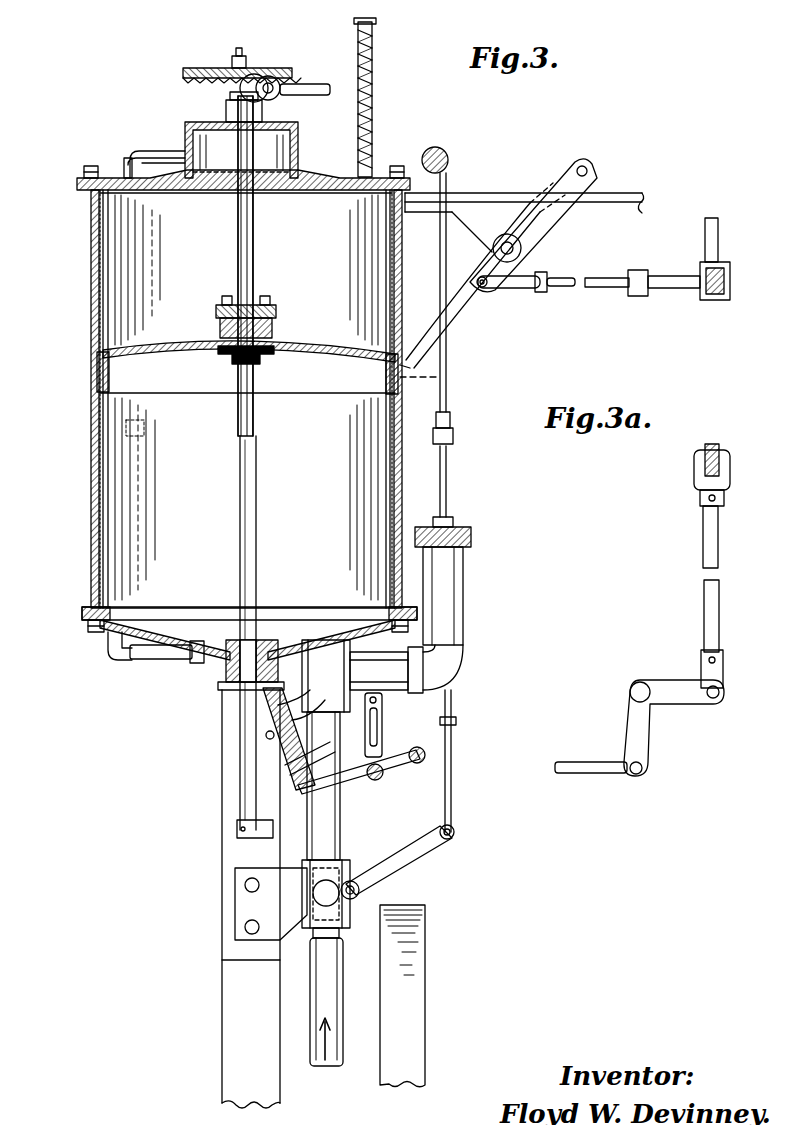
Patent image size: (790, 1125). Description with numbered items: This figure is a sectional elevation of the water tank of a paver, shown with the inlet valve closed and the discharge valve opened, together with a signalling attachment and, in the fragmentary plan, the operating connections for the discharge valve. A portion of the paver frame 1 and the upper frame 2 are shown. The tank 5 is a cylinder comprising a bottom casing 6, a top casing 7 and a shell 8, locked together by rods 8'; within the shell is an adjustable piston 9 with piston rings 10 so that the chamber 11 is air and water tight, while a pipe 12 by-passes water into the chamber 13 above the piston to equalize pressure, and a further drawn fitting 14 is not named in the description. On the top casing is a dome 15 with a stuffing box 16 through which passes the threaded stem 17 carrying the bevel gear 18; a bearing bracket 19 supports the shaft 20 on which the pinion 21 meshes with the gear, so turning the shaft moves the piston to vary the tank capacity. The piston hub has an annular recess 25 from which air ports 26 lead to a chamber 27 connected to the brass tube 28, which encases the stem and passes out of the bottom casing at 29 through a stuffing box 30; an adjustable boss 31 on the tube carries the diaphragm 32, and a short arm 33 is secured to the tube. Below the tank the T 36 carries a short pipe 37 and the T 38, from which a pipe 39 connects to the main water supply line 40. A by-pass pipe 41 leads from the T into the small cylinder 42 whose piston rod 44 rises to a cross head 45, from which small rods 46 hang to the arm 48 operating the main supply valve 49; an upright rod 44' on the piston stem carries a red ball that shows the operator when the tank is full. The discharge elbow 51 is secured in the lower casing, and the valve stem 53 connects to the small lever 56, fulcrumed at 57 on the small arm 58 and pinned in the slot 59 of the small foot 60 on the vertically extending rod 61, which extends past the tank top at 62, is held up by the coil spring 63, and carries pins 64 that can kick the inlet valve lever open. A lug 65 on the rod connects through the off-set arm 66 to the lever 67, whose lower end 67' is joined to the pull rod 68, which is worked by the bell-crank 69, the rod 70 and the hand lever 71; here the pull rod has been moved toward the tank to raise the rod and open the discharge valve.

In FIG. 3, the paver frame 1 is at (232, 848).
In FIG. 3, the upper frame 2 is at (612, 200).
In FIG. 3, the tank 5 is at (286, 491).
In FIG. 3, the bottom casing 6 is at (118, 625).
In FIG. 3, the top casing 7 is at (112, 178).
In FIG. 3, the shell 8 is at (222, 399).
In FIG. 3, the rods 8' is at (242, 399).
In FIG. 3, the adjustable piston 9 is at (322, 352).
In FIG. 3, the piston rings 10 is at (98, 362).
In FIG. 3, the chamber 11 is at (118, 462).
In FIG. 3, the pipe 12 is at (124, 650).
In FIG. 3, the chamber 13 is at (133, 258).
In FIG. 3, the drain pipe 14 is at (192, 662).
In FIG. 3, the dome 15 is at (298, 148).
In FIG. 3, the stuffing box 16 is at (226, 108).
In FIG. 3, the stem 17 is at (256, 232).
In FIG. 3, the bevel gear 18 is at (215, 72).
In FIG. 3, the bearing bracket 19 is at (270, 78).
In FIG. 3, the shaft 20 is at (310, 88).
In FIG. 3, the pinion 21 is at (280, 100).
In FIG. 3, the annular recess 25 is at (272, 336).
In FIG. 3, the air ports 26 is at (220, 322).
In FIG. 3, the chamber 27 is at (222, 300).
In FIG. 3, the brass tube 28 is at (257, 372).
In FIG. 3, the outlet 29 is at (236, 665).
In FIG. 3, the stuffing box 30 is at (230, 688).
In FIG. 3, the adjustable boss 31 is at (230, 355).
In FIG. 3, the diaphragm 32 is at (262, 360).
In FIG. 3, the short arm 33 is at (250, 842).
In FIG. 3, the T 36 is at (326, 676).
In FIG. 3, the short pipe 37 is at (318, 838).
In FIG. 3, the T 38 is at (305, 912).
In FIG. 3, the pipe 39 is at (342, 922).
In FIG. 3, the main water supply line 40 is at (330, 1000).
In FIG. 3, the by-pass pipe 41 is at (390, 672).
In FIG. 3, the small cylinder 42 is at (463, 614).
In FIG. 3, the piston rod 44 is at (472, 345).
In FIG. 3, the upright rod 44' is at (488, 356).
In FIG. 3, the cross head 45 is at (453, 437).
In FIG. 3, the small rods 46 is at (452, 705).
In FIG. 3, the arm 48 is at (408, 848).
In FIG. 3, the main supply valve 49 is at (360, 890).
In FIG. 3, the elbow 51 is at (290, 705).
In FIG. 3, the stem 53 is at (280, 745).
In FIG. 3, the small lever 56 is at (300, 790).
In FIG. 3, the fulcrum 57 is at (237, 800).
In FIG. 3, the small arm 58 is at (268, 760).
In FIG. 3, the slot 59 is at (382, 735).
In FIG. 3, the small foot 60 is at (398, 762).
In FIG. 3, the vertically extending rod 61 is at (412, 652).
In FIG. 3, the upper end of rod 62 is at (374, 70).
In FIG. 3, the coil spring 63 is at (374, 112).
In FIG. 3, the pins 64 is at (426, 757).
In FIG. 3, the small lug 65 is at (440, 378).
In FIG. 3, the off-set arm 66 is at (443, 318).
In FIG. 3, the lever 67 is at (533, 225).
In FIG. 3, the lower end of lever 67' is at (512, 294).
In FIG. 3, the pull rod 68 is at (594, 290).
In FIG. 3A, the pull rod 68 is at (588, 775).
In FIG. 3, the bell-crank 69 is at (660, 290).
In FIG. 3A, the bell-crank 69 is at (672, 688).
In FIG. 3A, the rod 70 is at (704, 548).
In FIG. 3, the hand lever 71 is at (706, 240).
In FIG. 3A, the hand lever 71 is at (696, 478).